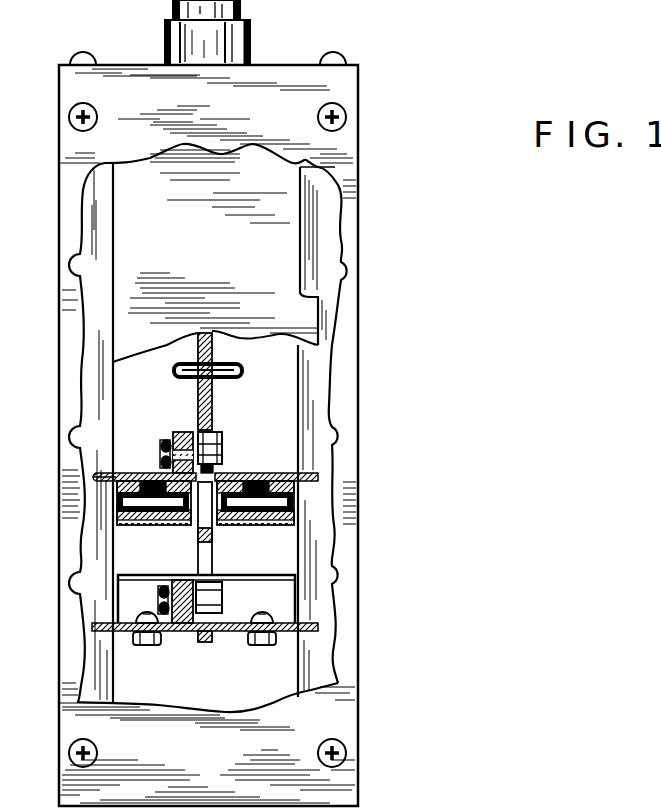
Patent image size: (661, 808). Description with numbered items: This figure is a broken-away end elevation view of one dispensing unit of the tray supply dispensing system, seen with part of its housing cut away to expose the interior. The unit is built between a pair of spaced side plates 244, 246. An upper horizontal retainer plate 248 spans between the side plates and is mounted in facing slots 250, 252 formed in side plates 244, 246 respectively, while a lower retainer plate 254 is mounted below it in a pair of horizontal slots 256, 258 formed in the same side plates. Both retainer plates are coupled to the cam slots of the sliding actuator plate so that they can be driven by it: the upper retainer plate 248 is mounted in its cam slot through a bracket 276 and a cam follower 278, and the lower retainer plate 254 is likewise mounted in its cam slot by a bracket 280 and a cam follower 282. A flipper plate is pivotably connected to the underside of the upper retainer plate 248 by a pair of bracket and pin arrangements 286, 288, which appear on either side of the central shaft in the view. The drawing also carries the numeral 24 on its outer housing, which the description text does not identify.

The probe housing 24 is at (657, 803).
The side plate 244 is at (115, 245).
The side plate 246 is at (300, 258).
The upper horizontal retainer plate 248 is at (280, 472).
The slot 250 is at (145, 448).
The slot 252 is at (318, 478).
The lower retainer plate 254 is at (286, 652).
The horizontal slot 256 is at (106, 640).
The horizontal slot 258 is at (318, 631).
The bracket 276 is at (186, 430).
The cam follower 278 is at (222, 434).
The bracket 280 is at (180, 575).
The cam follower 282 is at (222, 594).
The bracket and pin arrangement 286 is at (242, 372).
The bracket and pin arrangement 288 is at (276, 533).